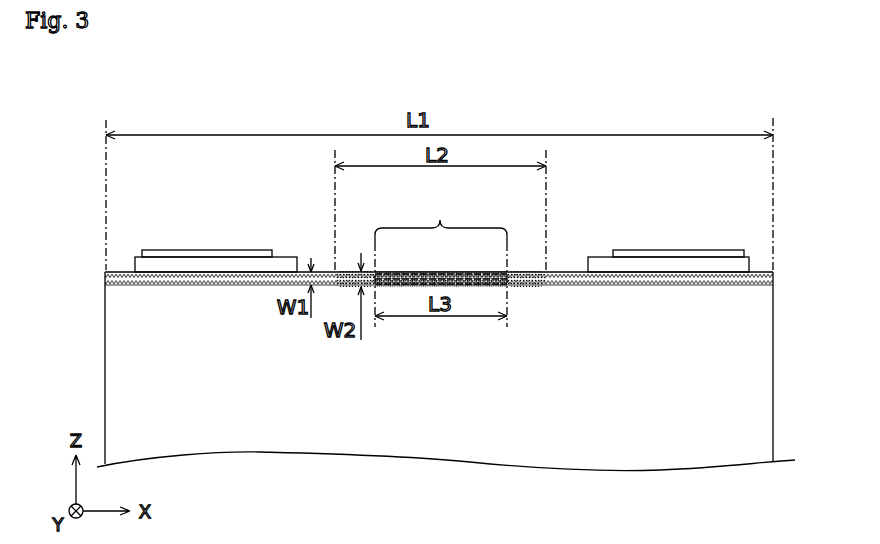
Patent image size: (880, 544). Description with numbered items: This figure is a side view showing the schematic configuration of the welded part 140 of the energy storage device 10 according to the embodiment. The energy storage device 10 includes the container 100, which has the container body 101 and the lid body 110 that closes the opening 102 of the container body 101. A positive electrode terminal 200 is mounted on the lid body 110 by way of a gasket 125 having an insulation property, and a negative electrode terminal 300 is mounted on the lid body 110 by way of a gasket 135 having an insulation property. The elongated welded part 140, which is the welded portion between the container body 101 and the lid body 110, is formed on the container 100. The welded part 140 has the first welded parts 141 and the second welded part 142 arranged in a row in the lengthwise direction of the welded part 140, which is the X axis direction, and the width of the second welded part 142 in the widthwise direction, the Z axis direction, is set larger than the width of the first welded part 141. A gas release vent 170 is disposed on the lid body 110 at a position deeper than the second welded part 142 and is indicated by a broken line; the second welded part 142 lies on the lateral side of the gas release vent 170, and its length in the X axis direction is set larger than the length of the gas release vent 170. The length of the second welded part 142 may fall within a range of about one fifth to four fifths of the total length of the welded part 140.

The energy storage device 10 is at (723, 107).
The container 100 is at (598, 192).
The container body 101 is at (260, 396).
The opening 102 is at (190, 303).
The lid body 110 is at (568, 270).
The gasket 125 is at (287, 256).
The gasket 135 is at (600, 257).
The welded part 140 is at (419, 355).
The first welded part 141 is at (233, 285).
The second welded part 142 is at (532, 287).
The gas release vent 170 is at (441, 255).
The positive electrode terminal 200 is at (177, 250).
The negative electrode terminal 300 is at (712, 250).